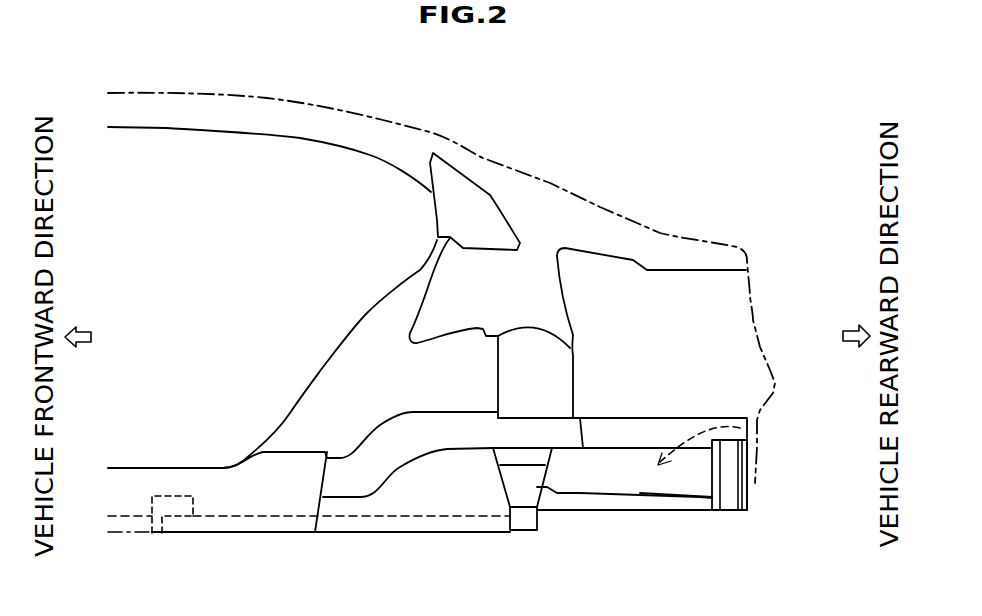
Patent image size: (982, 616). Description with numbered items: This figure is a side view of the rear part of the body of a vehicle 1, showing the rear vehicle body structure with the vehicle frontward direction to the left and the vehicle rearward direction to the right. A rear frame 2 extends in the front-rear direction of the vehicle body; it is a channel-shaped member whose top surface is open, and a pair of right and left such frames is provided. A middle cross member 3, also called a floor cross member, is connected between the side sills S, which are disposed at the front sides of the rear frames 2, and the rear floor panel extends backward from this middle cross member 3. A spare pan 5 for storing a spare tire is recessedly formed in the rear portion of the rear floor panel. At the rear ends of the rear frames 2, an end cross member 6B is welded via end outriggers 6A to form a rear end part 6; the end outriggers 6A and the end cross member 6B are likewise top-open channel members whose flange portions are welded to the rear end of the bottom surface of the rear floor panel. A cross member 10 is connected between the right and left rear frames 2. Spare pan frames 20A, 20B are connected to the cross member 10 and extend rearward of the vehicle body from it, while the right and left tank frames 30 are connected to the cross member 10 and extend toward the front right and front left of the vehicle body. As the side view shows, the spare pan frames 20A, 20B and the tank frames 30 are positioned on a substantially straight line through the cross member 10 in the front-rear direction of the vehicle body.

The vehicle 1 is at (630, 123).
The rear frame 2 is at (417, 437).
The middle cross member 3 is at (175, 496).
The spare pan 5 is at (752, 437).
The rear end part 6 is at (746, 491).
The end outrigger 6A is at (732, 467).
The end cross member 6B is at (725, 518).
The cross member 10 is at (542, 522).
The spare pan frame 20A is at (642, 528).
The spare pan frame 20B is at (618, 502).
The tank frame 30 is at (425, 530).
The side sill S is at (267, 498).